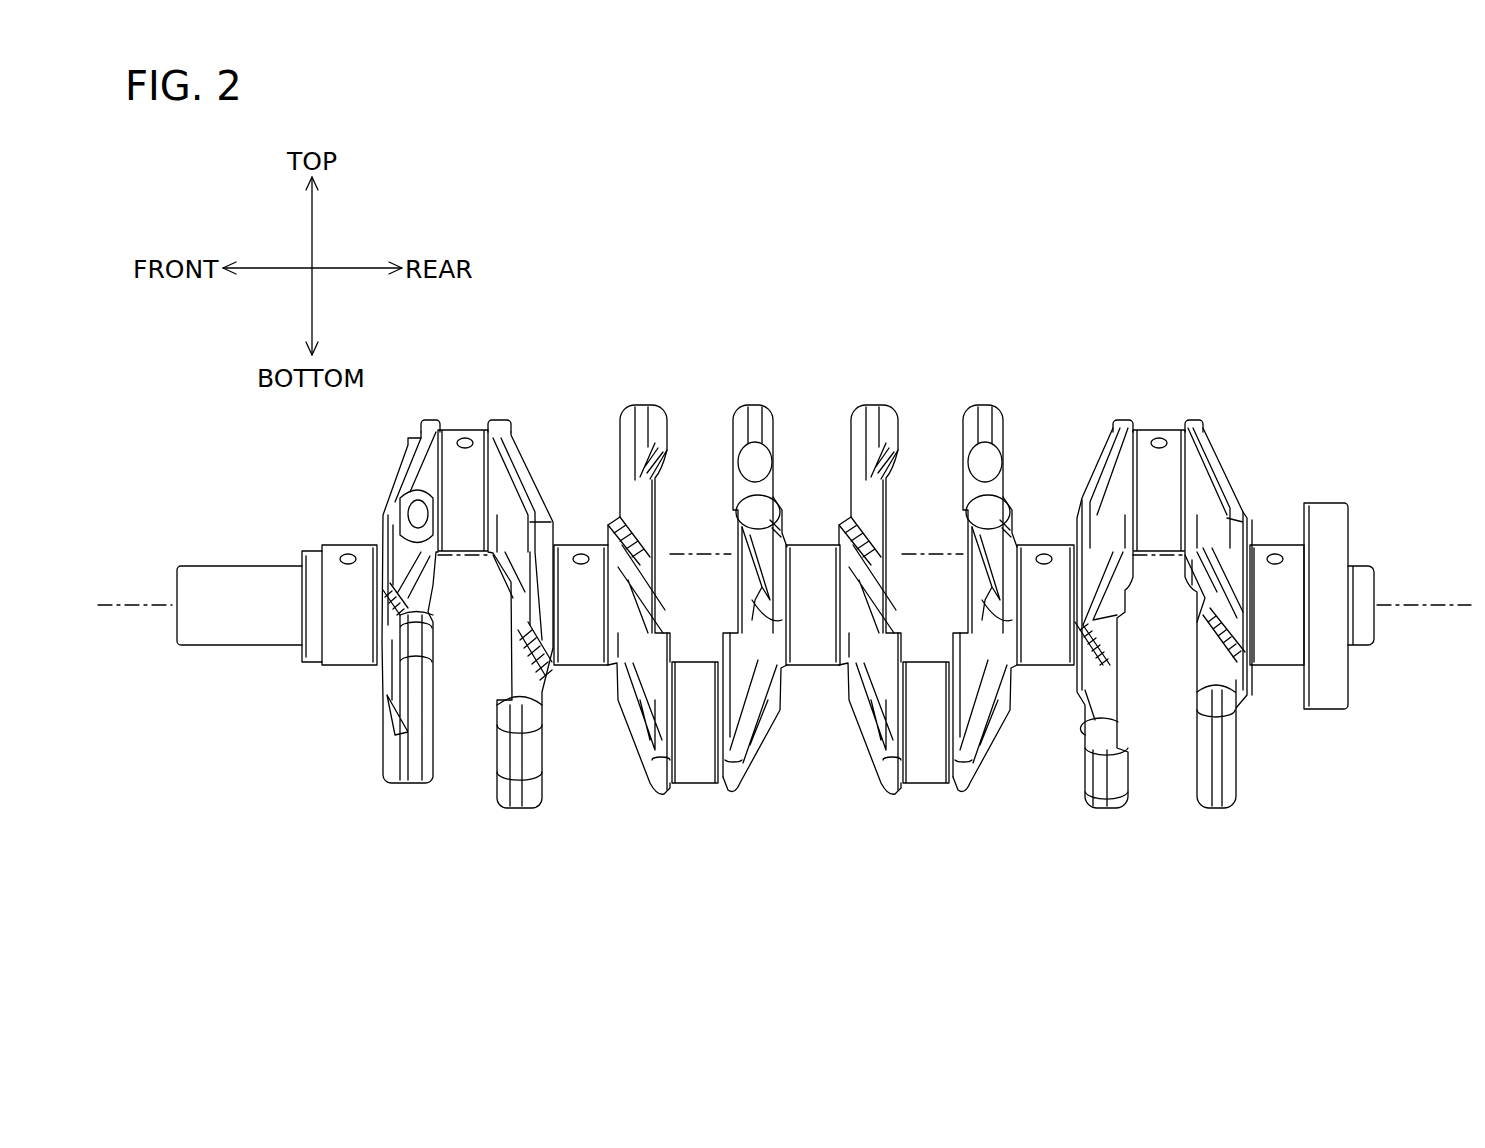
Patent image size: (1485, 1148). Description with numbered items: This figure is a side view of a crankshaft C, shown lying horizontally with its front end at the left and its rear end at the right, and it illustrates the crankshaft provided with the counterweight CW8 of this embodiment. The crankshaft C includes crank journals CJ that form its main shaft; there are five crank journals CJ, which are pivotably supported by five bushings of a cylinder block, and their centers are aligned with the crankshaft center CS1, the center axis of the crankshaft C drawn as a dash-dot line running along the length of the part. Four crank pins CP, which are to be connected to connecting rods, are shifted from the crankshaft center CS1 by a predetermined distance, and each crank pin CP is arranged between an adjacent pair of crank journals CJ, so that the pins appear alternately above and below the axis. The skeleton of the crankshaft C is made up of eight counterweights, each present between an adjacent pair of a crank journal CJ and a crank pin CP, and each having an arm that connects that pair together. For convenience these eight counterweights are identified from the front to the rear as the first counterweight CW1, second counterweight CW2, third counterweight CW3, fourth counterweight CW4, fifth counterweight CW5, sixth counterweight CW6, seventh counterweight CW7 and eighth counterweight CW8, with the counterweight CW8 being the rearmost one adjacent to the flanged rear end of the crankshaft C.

The crankshaft C is at (1285, 403).
The crankshaft center CS1 is at (1404, 603).
The crank journal CJ is at (345, 648).
The crank pin CP is at (466, 437).
The counterweight CW1 is at (410, 783).
The counterweight CW2 is at (517, 810).
The counterweight CW3 is at (648, 414).
The counterweight CW4 is at (757, 415).
The counterweight CW5 is at (875, 415).
The counterweight CW6 is at (987, 415).
The counterweight CW7 is at (1107, 808).
The counterweight CW8 is at (1218, 808).